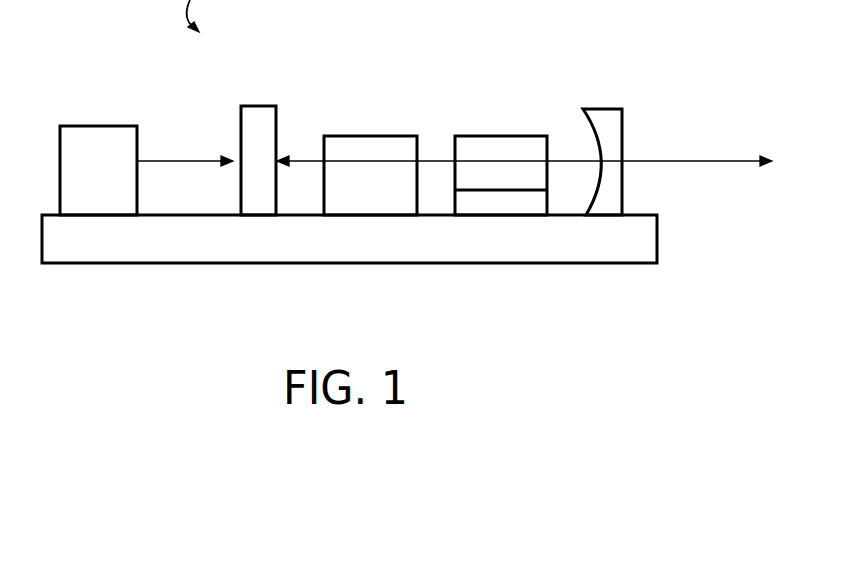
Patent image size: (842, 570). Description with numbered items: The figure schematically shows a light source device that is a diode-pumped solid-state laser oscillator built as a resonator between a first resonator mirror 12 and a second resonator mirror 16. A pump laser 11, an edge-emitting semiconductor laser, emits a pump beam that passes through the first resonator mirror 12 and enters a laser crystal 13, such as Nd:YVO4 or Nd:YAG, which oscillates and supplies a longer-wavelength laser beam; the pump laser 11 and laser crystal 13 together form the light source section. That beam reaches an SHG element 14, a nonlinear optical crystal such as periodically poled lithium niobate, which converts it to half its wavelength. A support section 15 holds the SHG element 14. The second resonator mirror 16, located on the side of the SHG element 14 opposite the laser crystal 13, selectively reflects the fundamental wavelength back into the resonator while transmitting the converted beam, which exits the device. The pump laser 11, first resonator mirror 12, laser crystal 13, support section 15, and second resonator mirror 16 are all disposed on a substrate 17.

The pump laser 11 is at (100, 132).
The first resonator mirror 12 is at (257, 115).
The laser crystal 13 is at (371, 141).
The SHG element 14 is at (500, 141).
The support section 15 is at (498, 208).
The second resonator mirror 16 is at (605, 113).
The substrate 17 is at (647, 235).